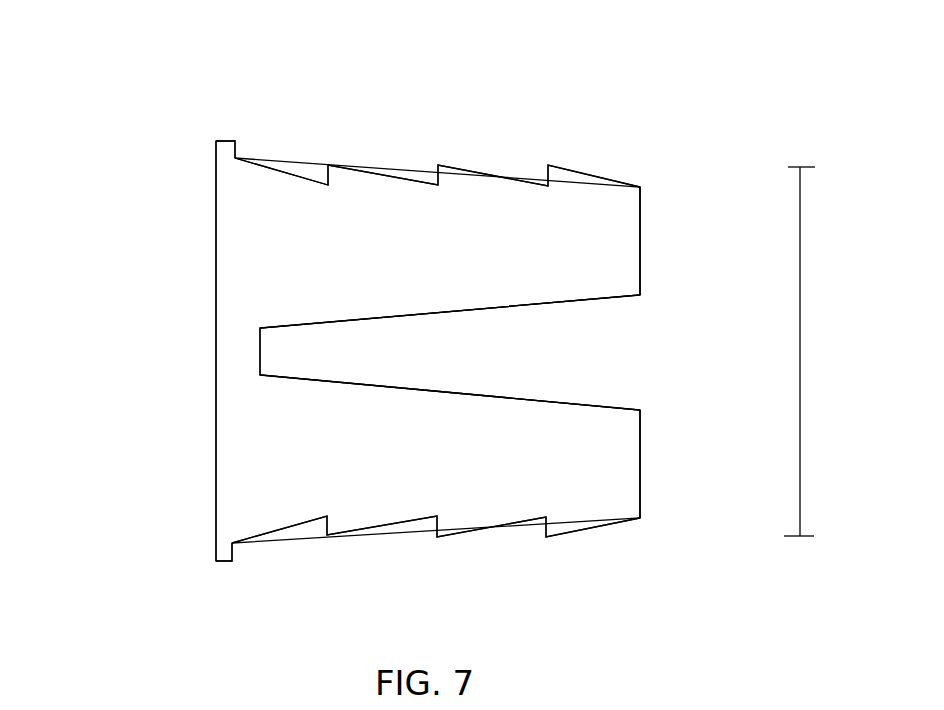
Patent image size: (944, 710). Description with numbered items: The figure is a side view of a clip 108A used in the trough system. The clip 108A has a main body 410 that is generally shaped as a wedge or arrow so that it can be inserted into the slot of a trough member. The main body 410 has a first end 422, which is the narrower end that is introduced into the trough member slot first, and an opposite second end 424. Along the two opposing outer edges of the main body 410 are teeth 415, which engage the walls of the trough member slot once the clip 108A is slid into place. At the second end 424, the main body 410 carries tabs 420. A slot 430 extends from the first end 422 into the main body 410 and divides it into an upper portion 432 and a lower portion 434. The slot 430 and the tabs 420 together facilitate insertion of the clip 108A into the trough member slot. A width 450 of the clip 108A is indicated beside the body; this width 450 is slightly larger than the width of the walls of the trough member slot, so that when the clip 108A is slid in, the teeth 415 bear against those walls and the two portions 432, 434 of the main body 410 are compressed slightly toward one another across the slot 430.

The clip 108A is at (159, 115).
The main body 410 is at (602, 227).
The teeth 415 is at (328, 165).
The tabs 420 is at (235, 148).
The first end 422 is at (640, 277).
The second end 424 is at (216, 384).
The slot 430 is at (312, 357).
The portion 432 is at (475, 283).
The portion 434 is at (475, 467).
The width 450 is at (800, 377).